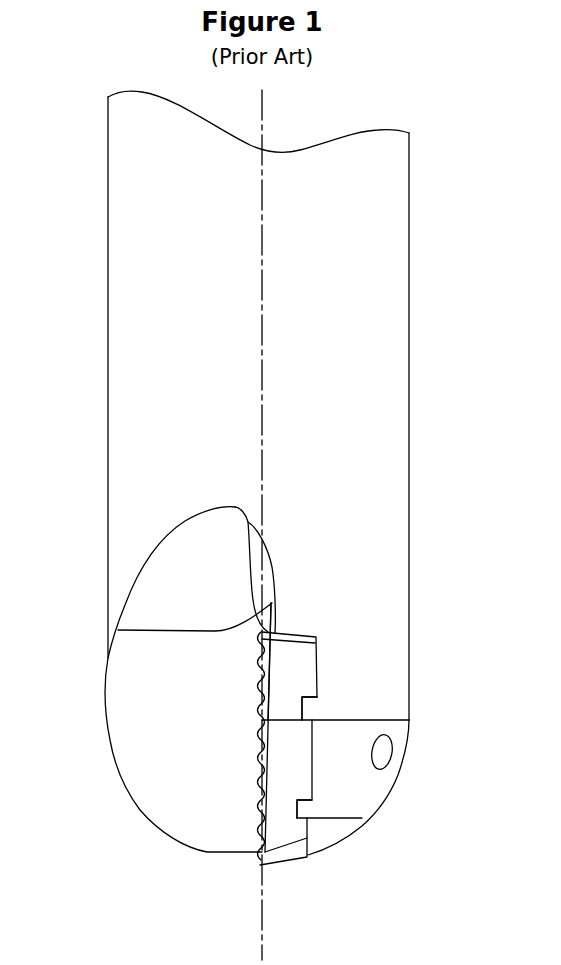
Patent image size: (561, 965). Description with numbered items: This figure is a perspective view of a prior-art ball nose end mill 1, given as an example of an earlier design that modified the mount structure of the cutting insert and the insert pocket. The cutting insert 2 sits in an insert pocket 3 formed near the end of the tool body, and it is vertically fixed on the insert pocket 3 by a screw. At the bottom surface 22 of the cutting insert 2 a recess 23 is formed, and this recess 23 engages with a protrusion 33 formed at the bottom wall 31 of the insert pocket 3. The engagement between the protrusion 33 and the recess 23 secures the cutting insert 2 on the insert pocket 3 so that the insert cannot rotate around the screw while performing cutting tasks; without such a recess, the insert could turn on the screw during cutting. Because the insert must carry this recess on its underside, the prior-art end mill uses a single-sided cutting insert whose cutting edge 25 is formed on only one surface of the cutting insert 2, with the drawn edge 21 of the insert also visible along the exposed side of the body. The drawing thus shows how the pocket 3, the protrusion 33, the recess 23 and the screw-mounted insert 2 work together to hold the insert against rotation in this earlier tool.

The drilling tool body 1 is at (447, 316).
The cutting insert 2 is at (291, 869).
The insert pocket 3 is at (146, 706).
The cutting edge 21 is at (252, 727).
The bottom surface 22 is at (320, 777).
The recess 23 is at (310, 703).
The cutting edge 25 is at (257, 747).
The bottom wall 31 is at (305, 750).
The protrusion 33 is at (310, 712).